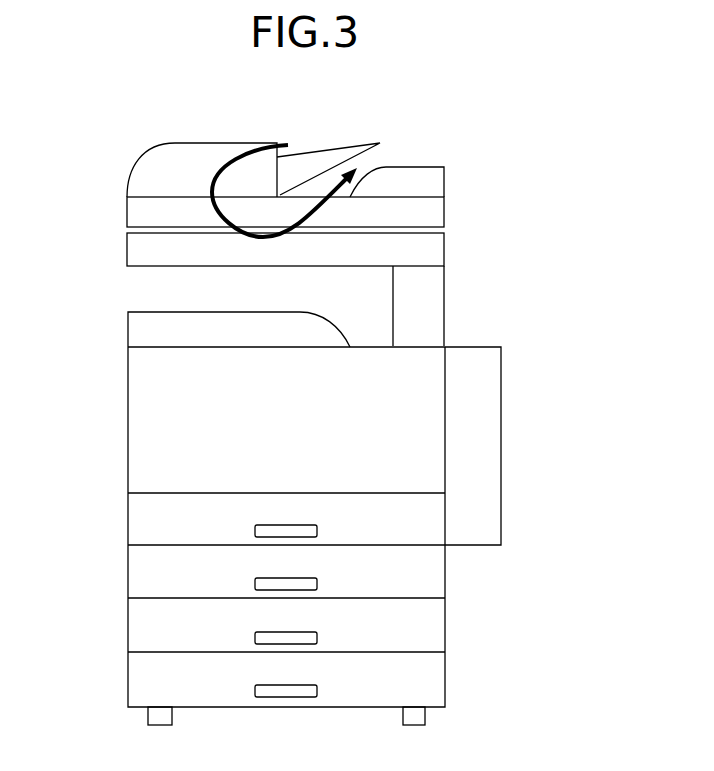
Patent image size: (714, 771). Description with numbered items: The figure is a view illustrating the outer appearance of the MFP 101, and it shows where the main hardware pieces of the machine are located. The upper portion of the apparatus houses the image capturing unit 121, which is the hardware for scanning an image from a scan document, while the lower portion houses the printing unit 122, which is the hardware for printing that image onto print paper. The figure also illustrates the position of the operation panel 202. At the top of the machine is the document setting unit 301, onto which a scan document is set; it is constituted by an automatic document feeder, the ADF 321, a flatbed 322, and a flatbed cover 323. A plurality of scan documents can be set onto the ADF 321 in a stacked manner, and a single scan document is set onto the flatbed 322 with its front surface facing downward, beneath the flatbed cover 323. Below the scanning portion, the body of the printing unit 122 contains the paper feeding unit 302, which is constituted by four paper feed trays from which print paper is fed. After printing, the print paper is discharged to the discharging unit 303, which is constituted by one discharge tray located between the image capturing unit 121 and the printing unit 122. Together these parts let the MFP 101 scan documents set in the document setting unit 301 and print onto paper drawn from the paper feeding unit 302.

The MFP 101 is at (165, 130).
The image capturing unit 121 is at (555, 135).
The printing unit 122 is at (555, 347).
The document setting unit 301 is at (140, 165).
The automatic document feeder (ADF) 321 is at (318, 157).
The flatbed 322 is at (393, 227).
The flatbed cover 323 is at (435, 210).
The operation panel 202 is at (435, 247).
The discharging unit 303 is at (143, 332).
The paper feeding unit 302 is at (433, 533).